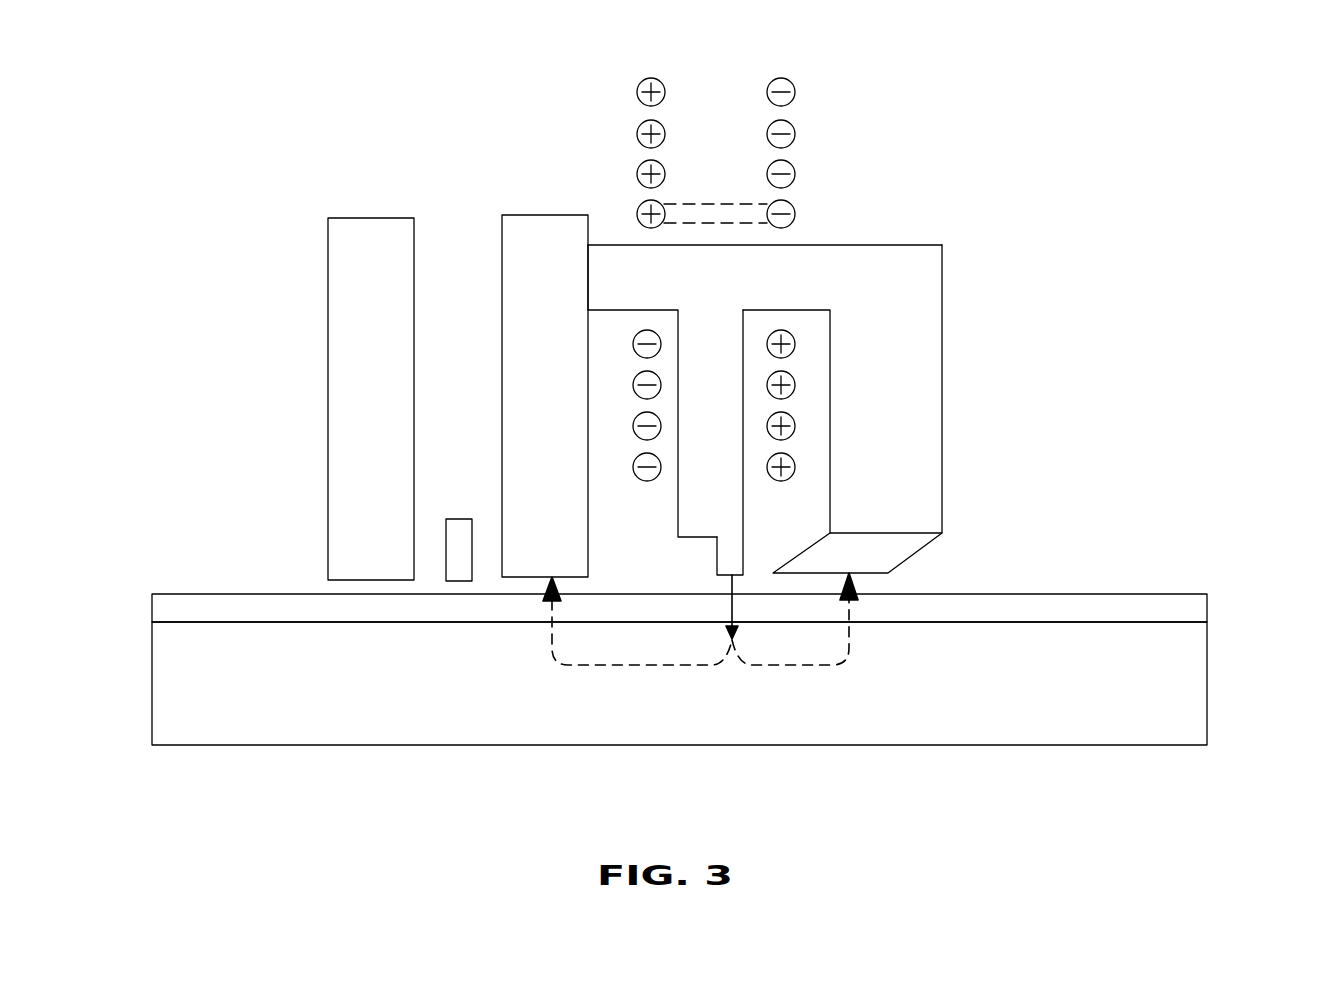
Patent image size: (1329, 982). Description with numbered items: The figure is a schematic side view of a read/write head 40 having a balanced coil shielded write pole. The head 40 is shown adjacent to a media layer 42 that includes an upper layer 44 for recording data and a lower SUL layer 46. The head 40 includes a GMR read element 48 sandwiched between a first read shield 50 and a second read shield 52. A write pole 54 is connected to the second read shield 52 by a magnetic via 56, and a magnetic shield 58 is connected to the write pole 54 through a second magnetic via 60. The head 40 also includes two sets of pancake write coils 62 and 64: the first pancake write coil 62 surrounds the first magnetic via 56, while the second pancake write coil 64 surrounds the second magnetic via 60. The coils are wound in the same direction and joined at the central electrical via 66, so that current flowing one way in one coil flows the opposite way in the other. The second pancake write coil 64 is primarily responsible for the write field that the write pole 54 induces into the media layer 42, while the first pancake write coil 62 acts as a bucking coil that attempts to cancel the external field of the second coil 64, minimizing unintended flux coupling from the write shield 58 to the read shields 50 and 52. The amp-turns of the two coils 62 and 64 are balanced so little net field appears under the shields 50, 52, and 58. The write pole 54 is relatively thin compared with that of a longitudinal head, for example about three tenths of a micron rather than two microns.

The read/write head 40 is at (205, 156).
The media layer 42 is at (721, 687).
The upper layer 44 is at (1193, 609).
The lower SUL layer 46 is at (1193, 713).
The GMR read element 48 is at (464, 518).
The first read shield 50 is at (357, 218).
The second read shield 52 is at (530, 215).
The write pole 54 is at (729, 543).
The magnetic via 56 is at (625, 244).
The magnetic shield 58 is at (923, 523).
The second magnetic via 60 is at (790, 378).
The first pancake write coil 62 is at (650, 75).
The second pancake write coil 64 is at (779, 75).
The central electrical via 66 is at (690, 203).